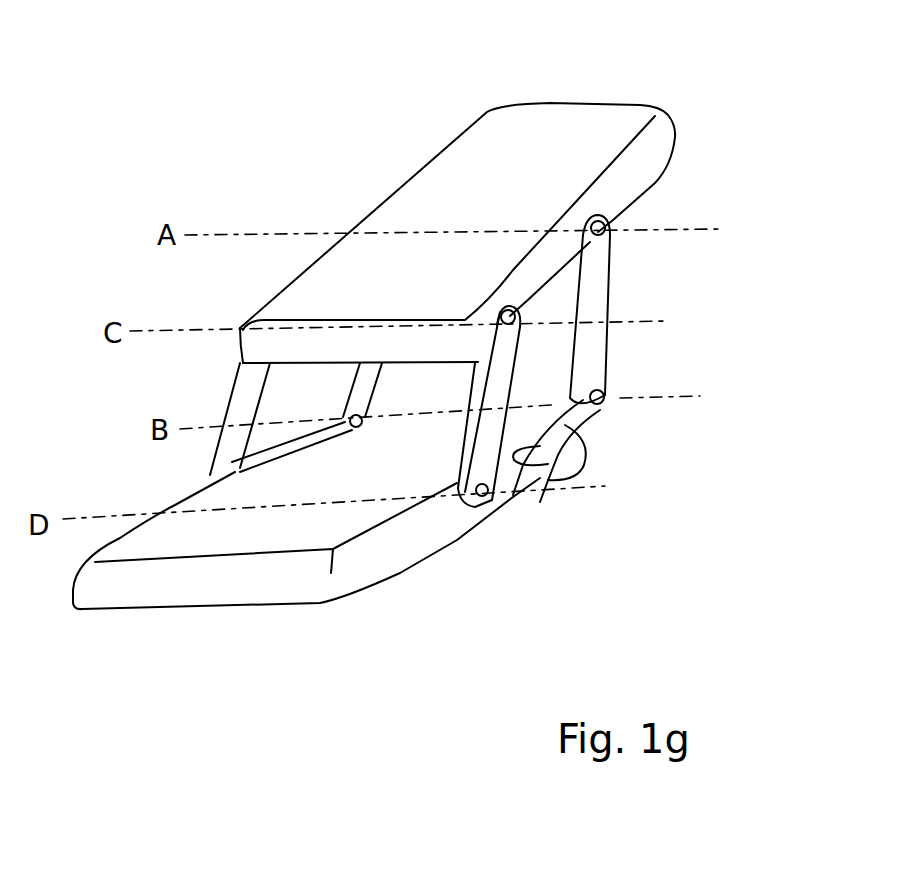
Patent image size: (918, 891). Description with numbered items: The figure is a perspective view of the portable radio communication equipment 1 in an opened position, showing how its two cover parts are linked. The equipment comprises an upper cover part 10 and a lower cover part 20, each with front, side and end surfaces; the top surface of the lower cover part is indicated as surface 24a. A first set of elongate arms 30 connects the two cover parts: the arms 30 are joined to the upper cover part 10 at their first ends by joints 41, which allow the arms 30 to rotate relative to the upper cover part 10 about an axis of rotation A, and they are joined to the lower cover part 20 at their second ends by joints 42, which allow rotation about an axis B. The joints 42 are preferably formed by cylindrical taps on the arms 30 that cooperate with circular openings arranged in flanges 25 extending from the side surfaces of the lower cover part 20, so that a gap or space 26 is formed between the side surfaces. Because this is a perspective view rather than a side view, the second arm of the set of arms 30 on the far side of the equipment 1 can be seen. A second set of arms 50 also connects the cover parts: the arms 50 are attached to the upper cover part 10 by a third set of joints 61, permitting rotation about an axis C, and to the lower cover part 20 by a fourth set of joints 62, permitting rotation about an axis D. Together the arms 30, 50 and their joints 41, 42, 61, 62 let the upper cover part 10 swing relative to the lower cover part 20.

The portable radio communication equipment 1 is at (140, 150).
The upper cover part 10 is at (487, 112).
The lower cover part 20 is at (383, 565).
The base top surface 24a is at (217, 587).
The flanges 25 is at (570, 432).
The gap or space 26 is at (548, 475).
The elongate arms 30 is at (613, 273).
The joints 41 is at (607, 222).
The joints 42 is at (603, 393).
The arms 50 is at (480, 443).
The third set of joints 61 is at (520, 330).
The fourth set of joints 62 is at (483, 497).